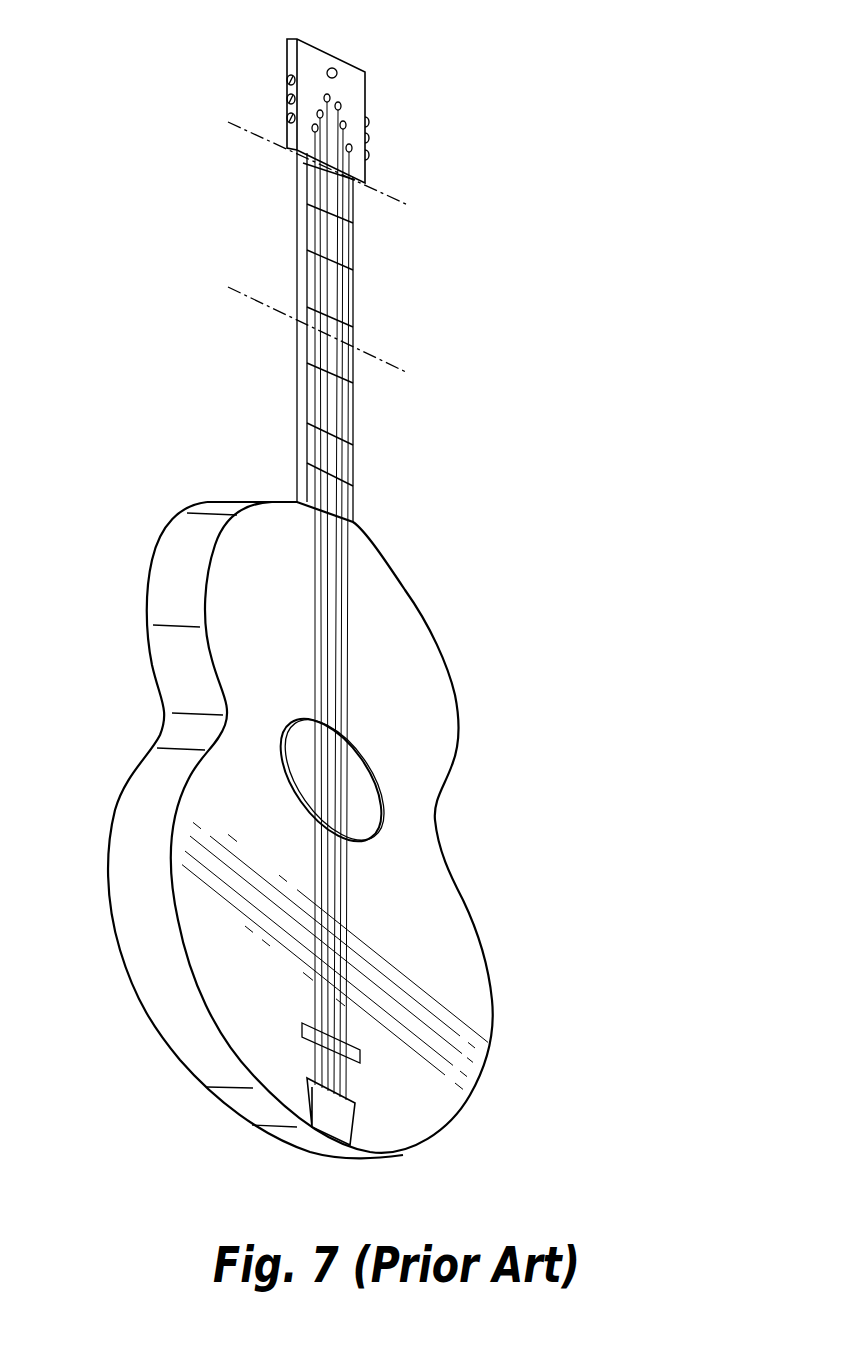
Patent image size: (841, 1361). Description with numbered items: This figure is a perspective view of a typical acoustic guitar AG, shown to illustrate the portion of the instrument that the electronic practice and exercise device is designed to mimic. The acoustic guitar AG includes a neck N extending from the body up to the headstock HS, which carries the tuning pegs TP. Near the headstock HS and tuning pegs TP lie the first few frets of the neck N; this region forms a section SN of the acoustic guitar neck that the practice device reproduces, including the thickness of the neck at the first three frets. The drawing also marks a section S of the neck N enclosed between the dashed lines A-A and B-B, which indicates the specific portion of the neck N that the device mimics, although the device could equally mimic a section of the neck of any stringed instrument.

The headstock HS is at (278, 57).
The tuning pegs TP is at (375, 117).
The section S is at (290, 240).
The section of acoustic guitar neck SN is at (388, 287).
The neck N is at (342, 423).
The dotted line A- A is at (319, 333).
The dotted line B- B is at (319, 166).
The acoustic guitar AG is at (553, 815).